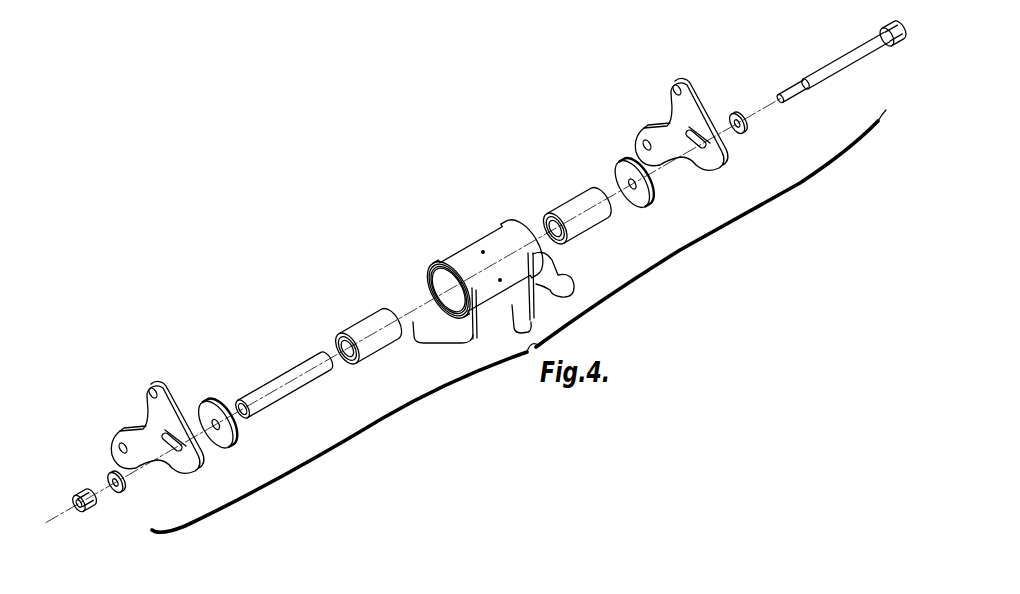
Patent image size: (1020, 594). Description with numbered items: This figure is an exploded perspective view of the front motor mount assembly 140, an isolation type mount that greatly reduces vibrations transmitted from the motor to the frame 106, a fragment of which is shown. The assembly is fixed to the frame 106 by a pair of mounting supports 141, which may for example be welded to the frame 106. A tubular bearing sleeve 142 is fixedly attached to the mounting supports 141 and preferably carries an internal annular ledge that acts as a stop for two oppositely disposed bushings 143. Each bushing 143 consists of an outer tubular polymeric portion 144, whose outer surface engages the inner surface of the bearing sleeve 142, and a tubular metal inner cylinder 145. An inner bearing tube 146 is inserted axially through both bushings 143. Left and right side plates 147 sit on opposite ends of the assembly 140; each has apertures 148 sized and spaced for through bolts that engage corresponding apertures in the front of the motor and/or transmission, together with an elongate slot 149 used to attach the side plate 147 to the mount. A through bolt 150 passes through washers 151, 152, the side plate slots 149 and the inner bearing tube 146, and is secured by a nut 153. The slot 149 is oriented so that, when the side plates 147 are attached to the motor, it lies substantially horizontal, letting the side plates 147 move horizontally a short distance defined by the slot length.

The frame 106 is at (555, 268).
The front motor mount assembly 140 is at (589, 76).
The mounting supports 141 is at (435, 300).
The tubular bearing sleeve 142 is at (470, 260).
The bushings 143 is at (371, 304).
The outer tubular polymeric portion 144 is at (352, 322).
The tubular metal inner cylinder 145 is at (335, 346).
The inner bearing tube 146 is at (283, 372).
The side plates 147 is at (158, 380).
The apertures 148 is at (149, 391).
The slot 149 is at (176, 452).
The through bolt 150 is at (833, 62).
The washer 151 is at (110, 478).
The washer 152 is at (206, 410).
The nut 153 is at (80, 496).